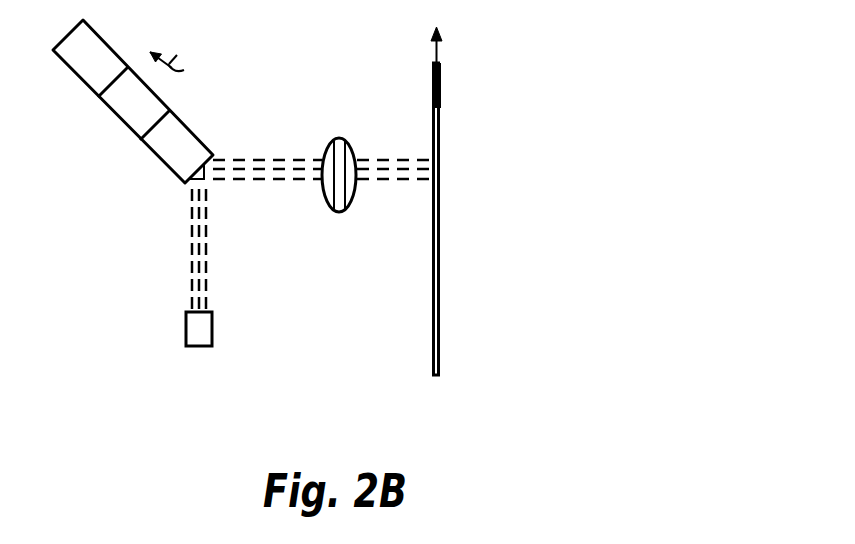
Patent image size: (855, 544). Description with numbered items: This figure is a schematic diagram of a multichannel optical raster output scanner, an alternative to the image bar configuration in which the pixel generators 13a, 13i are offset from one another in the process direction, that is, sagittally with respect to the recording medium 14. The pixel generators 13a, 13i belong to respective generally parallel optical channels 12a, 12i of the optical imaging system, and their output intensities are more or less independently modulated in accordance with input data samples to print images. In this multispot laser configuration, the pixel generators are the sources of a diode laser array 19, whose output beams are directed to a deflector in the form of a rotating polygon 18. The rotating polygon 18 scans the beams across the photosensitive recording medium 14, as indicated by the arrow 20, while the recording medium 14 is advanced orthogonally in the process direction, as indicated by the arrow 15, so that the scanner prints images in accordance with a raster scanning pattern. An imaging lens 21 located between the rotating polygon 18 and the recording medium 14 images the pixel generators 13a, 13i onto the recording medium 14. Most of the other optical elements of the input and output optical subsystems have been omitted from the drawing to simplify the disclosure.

The rotating polygon 18 is at (125, 109).
The arrow 20 is at (183, 71).
The imaging lens 21 is at (339, 137).
The optical channel 12a is at (412, 158).
The optical channel 12i is at (392, 181).
The photosensitive recording medium 14 is at (441, 312).
The arrow 15 is at (438, 47).
The optical pixel generator 13i is at (186, 311).
The optical pixel generator 13a is at (212, 311).
The diode laser array 19 is at (198, 346).